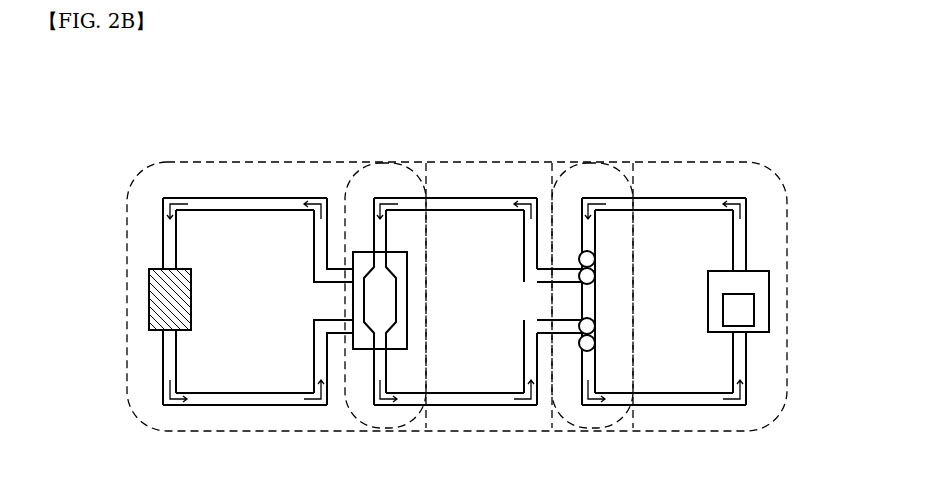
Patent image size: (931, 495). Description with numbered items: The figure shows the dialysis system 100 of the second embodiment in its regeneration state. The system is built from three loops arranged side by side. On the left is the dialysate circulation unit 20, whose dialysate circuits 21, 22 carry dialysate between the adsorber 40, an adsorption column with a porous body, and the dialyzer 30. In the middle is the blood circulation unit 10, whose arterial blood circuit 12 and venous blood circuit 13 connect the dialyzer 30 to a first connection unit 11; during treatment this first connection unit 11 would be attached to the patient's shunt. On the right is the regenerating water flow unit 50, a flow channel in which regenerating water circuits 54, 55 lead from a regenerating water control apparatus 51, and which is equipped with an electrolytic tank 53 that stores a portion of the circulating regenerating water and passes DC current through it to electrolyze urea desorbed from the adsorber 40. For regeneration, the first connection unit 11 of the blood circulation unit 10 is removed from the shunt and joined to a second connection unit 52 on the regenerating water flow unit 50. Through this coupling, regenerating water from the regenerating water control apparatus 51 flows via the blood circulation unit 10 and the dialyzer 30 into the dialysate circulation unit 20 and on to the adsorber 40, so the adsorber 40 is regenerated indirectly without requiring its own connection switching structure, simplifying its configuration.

The dialysis system 100 is at (143, 122).
The dialysate circulation unit 20 is at (217, 165).
The dialysate circuit 21 is at (300, 197).
The dialysate circuit 22 is at (242, 405).
The adsorber 40 is at (150, 295).
The dialyzer 30 is at (360, 252).
The blood circulation unit 10 is at (552, 161).
The arterial blood circuit 12 is at (452, 197).
The venous blood circuit 13 is at (463, 405).
The first connection unit 11 is at (585, 322).
The second connection unit 52 is at (588, 258).
The regenerating water flow unit 50 is at (737, 161).
The regenerating water circuit 54 is at (670, 197).
The regenerating water circuit 55 is at (670, 405).
The regenerating water control apparatus 51 is at (757, 270).
The electrolytic tank 53 is at (754, 313).